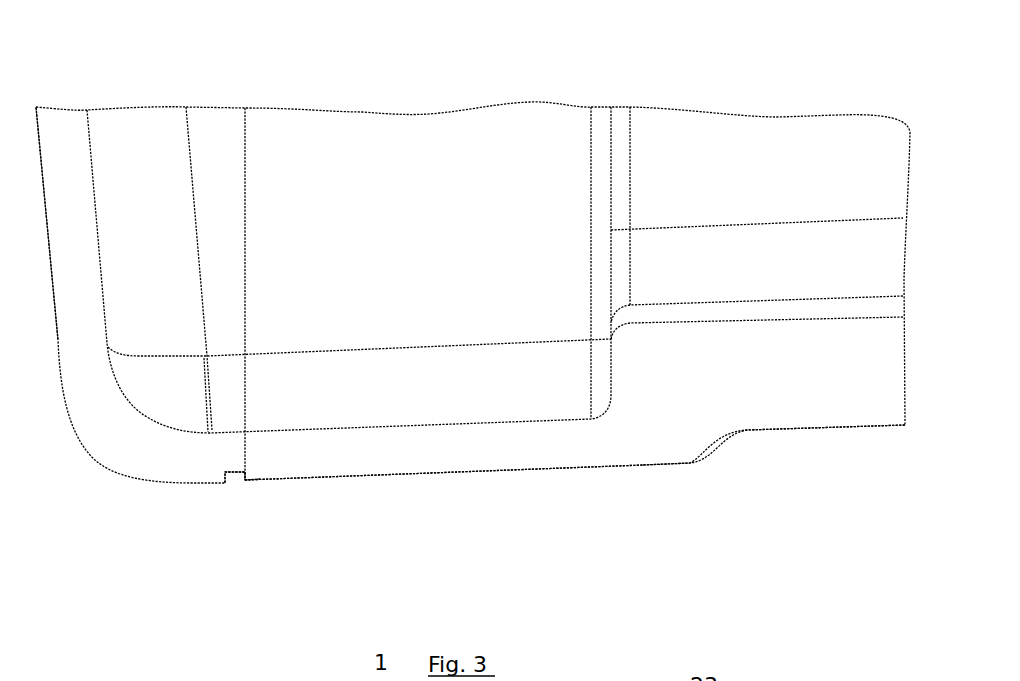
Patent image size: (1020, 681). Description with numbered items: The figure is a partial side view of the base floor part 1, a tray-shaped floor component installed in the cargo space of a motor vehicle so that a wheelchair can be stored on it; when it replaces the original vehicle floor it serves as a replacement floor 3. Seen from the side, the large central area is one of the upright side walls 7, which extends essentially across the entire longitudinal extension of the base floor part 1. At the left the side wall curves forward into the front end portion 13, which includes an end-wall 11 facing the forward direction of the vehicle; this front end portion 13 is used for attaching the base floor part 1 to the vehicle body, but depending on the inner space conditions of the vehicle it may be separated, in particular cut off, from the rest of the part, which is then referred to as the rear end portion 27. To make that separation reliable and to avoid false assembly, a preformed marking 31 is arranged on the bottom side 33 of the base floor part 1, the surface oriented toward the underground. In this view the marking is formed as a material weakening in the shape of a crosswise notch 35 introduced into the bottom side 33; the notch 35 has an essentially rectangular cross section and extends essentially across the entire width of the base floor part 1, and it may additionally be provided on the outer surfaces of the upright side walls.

The base floor part 1 is at (473, 245).
The replacement floor 3 is at (772, 98).
The upright side wall 7 is at (392, 268).
The end-wall 11 is at (47, 208).
The front end portion 13 is at (55, 325).
The rear end portion 27 is at (643, 467).
The preformed marking 31 is at (240, 490).
The bottom side 33 is at (482, 473).
The crosswise notch 35 is at (233, 473).